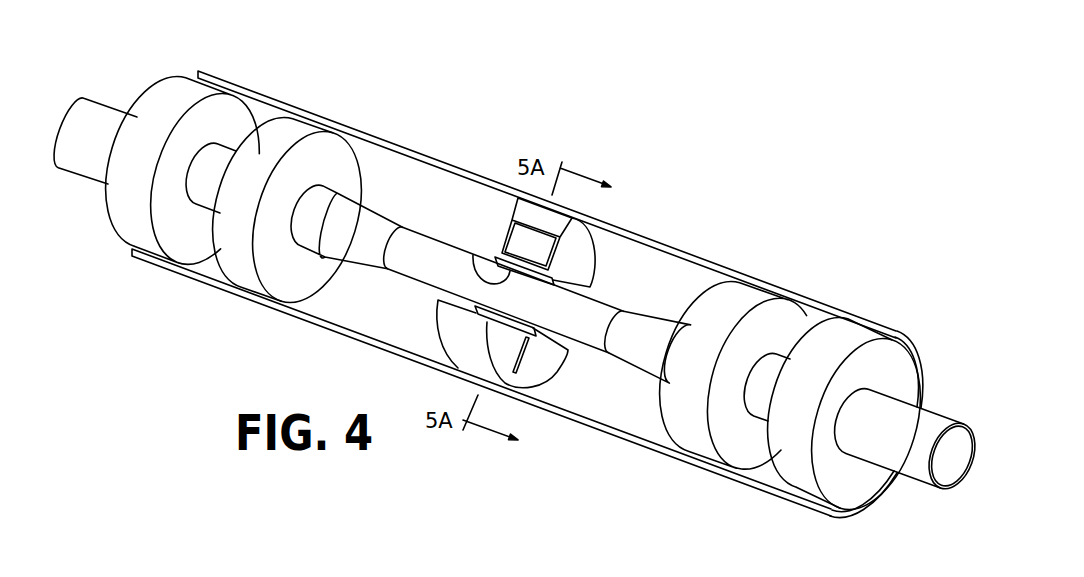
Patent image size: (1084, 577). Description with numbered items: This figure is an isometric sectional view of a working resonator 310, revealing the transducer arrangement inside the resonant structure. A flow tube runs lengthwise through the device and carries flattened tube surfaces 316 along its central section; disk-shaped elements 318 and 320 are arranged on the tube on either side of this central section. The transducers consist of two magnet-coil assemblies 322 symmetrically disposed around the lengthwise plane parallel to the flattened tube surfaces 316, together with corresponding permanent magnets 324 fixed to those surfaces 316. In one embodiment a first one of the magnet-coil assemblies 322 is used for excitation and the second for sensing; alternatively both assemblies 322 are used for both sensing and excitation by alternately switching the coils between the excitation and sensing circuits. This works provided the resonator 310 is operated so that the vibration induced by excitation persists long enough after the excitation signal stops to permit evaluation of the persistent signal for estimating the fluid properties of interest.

The resonator 310 is at (577, 133).
The flattened tube surfaces 316 is at (604, 303).
The inner disc 318 is at (248, 277).
The outer disc 320 is at (143, 237).
The magnet-coil assemblies 322 is at (594, 251).
The permanent magnets 324 is at (474, 255).